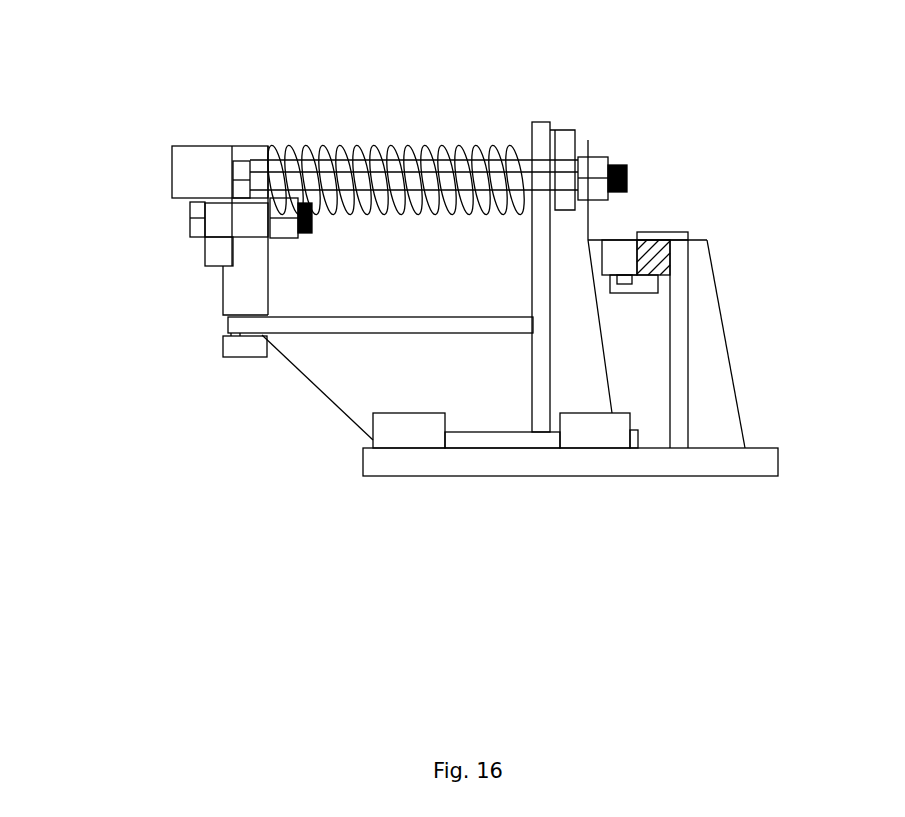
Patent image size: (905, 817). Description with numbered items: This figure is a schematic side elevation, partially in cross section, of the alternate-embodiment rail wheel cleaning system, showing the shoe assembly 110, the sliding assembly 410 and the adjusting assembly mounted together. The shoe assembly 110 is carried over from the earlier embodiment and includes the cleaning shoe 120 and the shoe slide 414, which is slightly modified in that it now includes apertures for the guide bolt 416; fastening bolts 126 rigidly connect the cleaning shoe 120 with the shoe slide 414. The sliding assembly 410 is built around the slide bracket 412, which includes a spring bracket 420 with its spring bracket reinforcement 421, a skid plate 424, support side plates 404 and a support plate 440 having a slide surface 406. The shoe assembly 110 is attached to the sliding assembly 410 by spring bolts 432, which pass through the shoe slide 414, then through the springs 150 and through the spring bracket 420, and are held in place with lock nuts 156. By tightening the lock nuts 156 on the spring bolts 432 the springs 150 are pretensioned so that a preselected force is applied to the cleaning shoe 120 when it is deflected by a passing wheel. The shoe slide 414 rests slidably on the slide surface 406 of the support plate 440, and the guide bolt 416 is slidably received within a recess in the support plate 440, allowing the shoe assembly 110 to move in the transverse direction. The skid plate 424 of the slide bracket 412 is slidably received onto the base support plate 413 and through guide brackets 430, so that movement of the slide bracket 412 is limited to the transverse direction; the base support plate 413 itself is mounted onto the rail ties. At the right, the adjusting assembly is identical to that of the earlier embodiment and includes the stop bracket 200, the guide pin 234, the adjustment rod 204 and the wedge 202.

The shoe assembly 110 is at (114, 106).
The cleaning shoe 120 is at (213, 170).
The fastening bolts 126 is at (192, 226).
The springs 150 is at (430, 143).
The lock nuts 156 is at (588, 140).
The support plate 440 is at (397, 323).
The spring bracket 420 is at (542, 121).
The slide bracket 412 is at (655, 111).
The spring bolts 432 is at (628, 178).
The wedge 202 is at (620, 255).
The adjustment rod 204 is at (690, 243).
The guide pin 234 is at (622, 295).
The stop bracket 200 is at (723, 410).
The shoe slide 414 is at (243, 293).
The slide surface 406 is at (331, 320).
The guide bolt 416 is at (245, 360).
The support side plates 404 is at (362, 378).
The guide brackets 430 is at (408, 433).
The skid plate 424 is at (505, 440).
The spring bracket reinforcement 421 is at (582, 370).
The base support plate 413 is at (708, 466).
The sliding assembly 410 is at (281, 557).